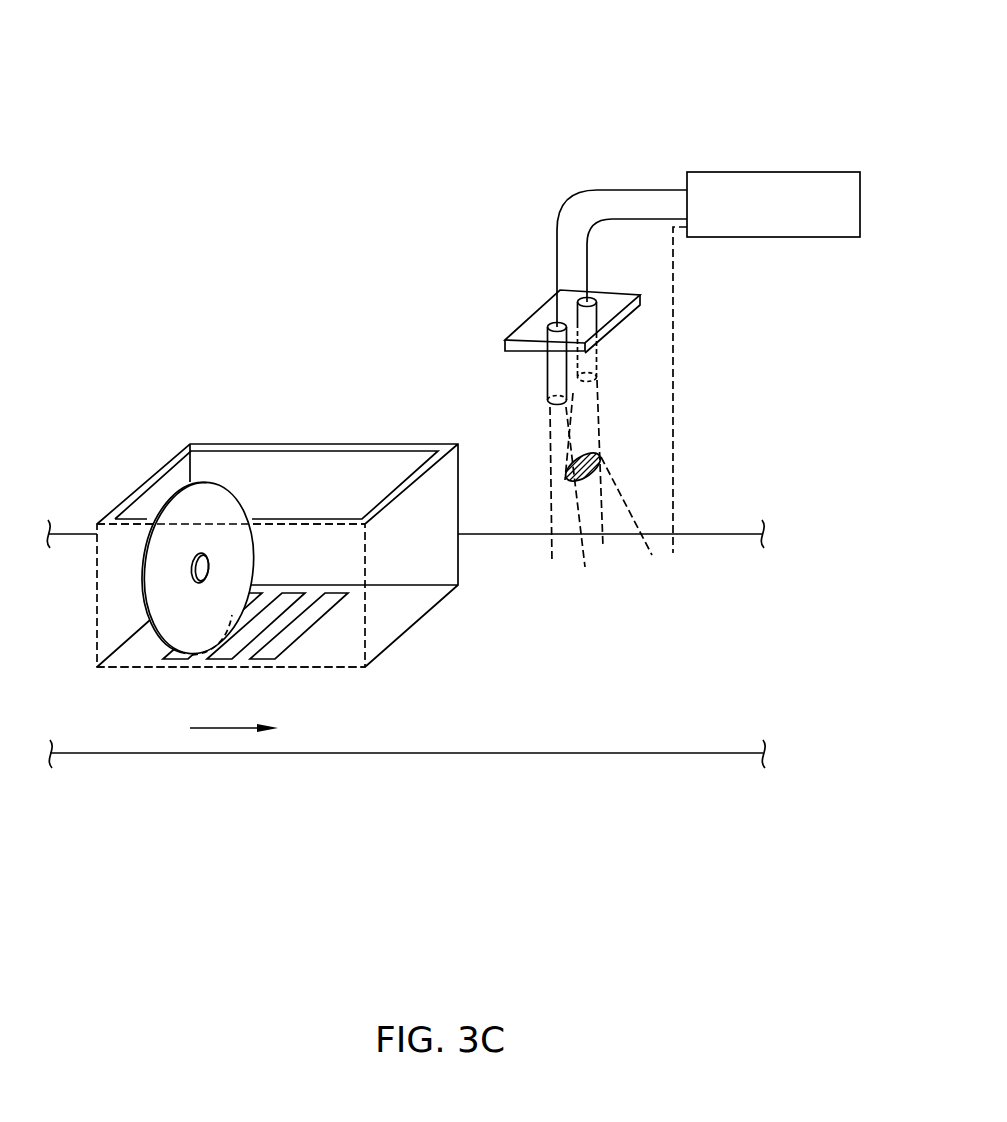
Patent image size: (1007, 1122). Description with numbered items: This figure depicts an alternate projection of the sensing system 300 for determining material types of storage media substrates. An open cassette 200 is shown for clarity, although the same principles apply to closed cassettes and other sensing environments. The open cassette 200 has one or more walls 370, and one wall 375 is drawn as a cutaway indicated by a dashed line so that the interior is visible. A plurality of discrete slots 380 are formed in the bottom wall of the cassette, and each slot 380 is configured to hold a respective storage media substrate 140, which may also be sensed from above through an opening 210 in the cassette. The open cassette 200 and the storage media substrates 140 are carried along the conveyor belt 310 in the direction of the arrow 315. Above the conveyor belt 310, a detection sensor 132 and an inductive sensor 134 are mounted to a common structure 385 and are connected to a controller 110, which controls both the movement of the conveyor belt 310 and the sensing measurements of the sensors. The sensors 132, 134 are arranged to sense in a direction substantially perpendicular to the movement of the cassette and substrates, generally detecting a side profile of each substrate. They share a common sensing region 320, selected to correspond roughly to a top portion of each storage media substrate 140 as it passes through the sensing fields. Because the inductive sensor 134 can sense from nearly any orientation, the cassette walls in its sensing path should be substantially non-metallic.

The sensing system 300 is at (600, 49).
The conveyor belt 310 is at (676, 722).
The arrow 315 is at (232, 730).
The open cassette 200 is at (304, 360).
The opening 210 is at (276, 485).
The storage media substrate 140 is at (232, 487).
The walls 370 is at (402, 613).
The wall 375 is at (314, 668).
The slots 380 is at (257, 665).
The controller 110 is at (773, 204).
The common structure 385 is at (532, 317).
The detection sensor 132 is at (597, 350).
The inductive sensor 134 is at (545, 373).
The common sensing region 320 is at (585, 452).